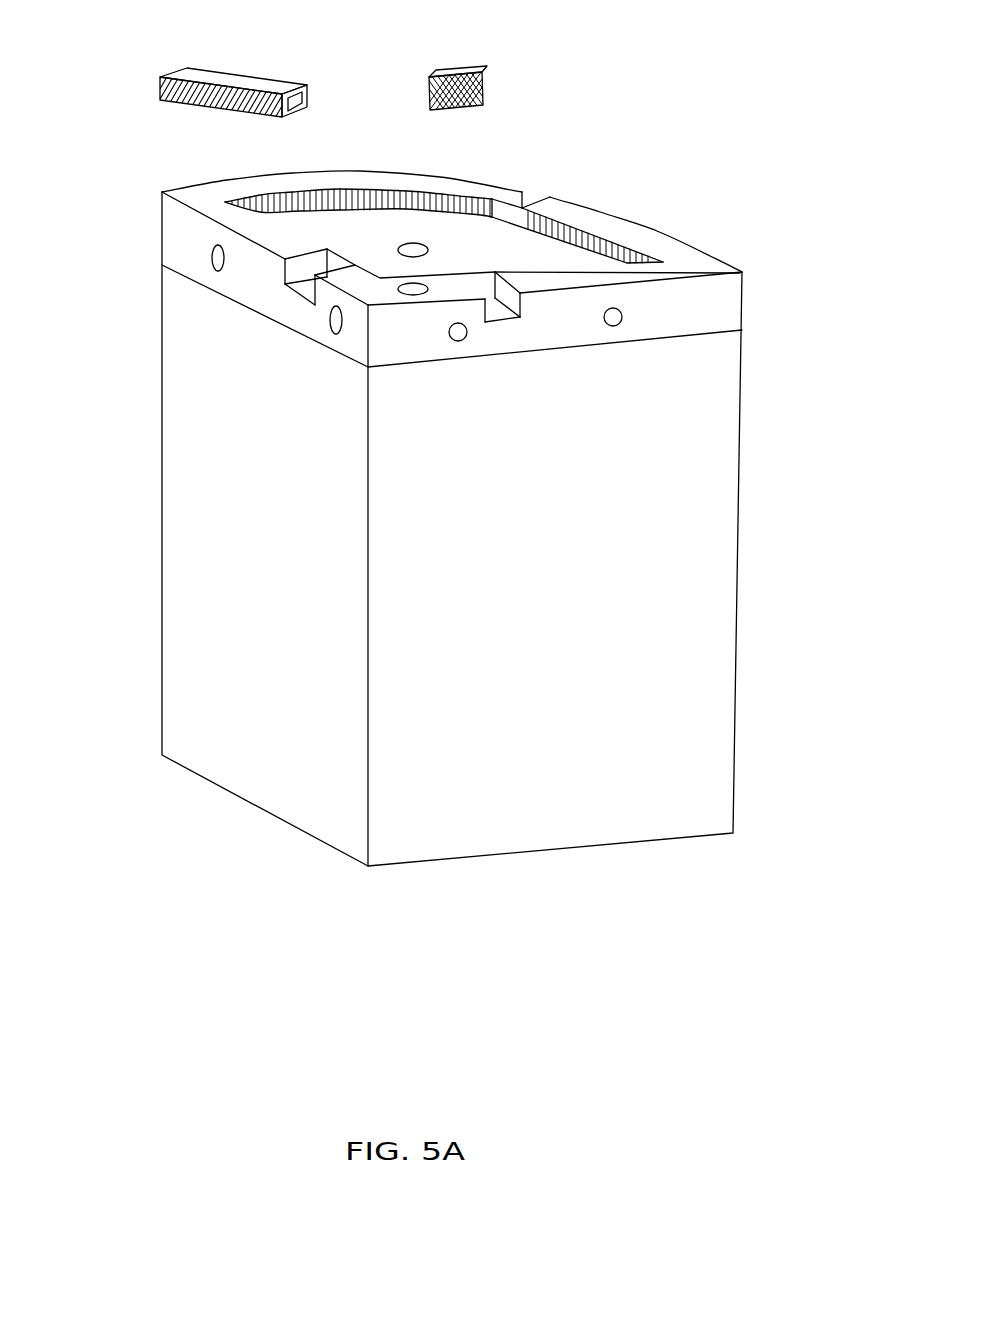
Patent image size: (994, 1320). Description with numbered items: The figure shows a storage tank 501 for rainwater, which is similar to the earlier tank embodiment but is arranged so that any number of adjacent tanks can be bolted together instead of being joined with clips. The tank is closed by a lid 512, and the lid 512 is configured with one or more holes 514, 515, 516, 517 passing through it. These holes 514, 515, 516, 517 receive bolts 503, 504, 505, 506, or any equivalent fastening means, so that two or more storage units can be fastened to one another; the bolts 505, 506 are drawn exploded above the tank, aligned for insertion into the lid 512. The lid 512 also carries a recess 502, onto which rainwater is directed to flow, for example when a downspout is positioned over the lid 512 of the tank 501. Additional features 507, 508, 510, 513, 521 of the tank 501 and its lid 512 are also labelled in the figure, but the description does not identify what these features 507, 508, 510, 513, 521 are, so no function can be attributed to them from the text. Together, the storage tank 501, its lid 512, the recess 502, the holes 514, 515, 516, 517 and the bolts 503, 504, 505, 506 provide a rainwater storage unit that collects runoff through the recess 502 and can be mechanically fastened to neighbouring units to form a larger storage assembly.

The storage tank 501 is at (760, 500).
The recess 502 is at (527, 253).
The bolt 503 is at (520, 318).
The bolt 504 is at (355, 265).
The bolt 505 is at (312, 250).
The bolt 506 is at (473, 252).
The opening 507 is at (410, 242).
The corner pocket 508 is at (318, 282).
The rim notch 510 is at (528, 198).
The lid 512 is at (670, 223).
The top slab edge 513 is at (722, 337).
The hole 514 is at (203, 252).
The hole 515 is at (335, 335).
The hole 516 is at (457, 342).
The hole 517 is at (622, 315).
The curved channel 521 is at (710, 268).